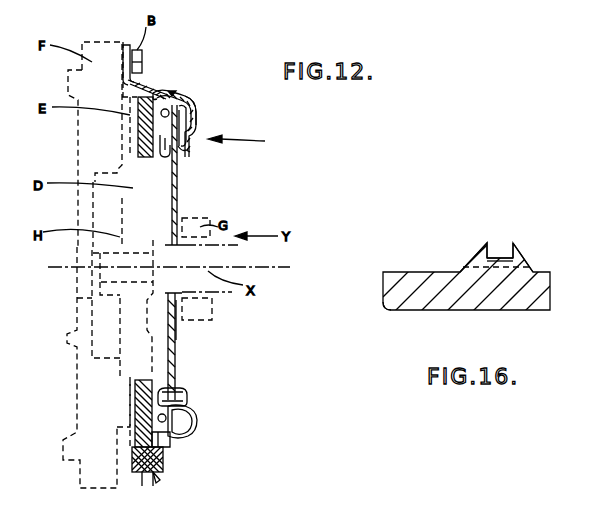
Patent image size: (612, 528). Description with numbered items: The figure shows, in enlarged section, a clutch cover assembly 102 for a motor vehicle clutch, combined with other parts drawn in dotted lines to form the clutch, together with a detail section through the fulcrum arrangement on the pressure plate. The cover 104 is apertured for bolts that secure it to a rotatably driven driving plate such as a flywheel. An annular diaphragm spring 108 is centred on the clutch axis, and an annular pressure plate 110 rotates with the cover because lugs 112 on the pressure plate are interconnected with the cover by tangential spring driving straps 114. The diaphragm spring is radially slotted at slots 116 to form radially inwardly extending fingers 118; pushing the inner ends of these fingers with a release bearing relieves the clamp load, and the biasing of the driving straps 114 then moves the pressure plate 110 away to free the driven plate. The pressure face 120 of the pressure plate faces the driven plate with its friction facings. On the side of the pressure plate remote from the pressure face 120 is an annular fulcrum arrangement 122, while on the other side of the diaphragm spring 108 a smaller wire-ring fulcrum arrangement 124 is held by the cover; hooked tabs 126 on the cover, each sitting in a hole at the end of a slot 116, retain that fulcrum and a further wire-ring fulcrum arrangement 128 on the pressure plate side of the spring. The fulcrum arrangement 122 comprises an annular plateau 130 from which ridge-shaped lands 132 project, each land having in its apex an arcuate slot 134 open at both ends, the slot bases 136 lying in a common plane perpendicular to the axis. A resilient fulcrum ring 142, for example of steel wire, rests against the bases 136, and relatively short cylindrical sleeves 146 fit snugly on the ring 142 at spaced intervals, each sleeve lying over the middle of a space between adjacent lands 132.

In FIG. 12, the clutch cover assembly 102 is at (265, 141).
In FIG. 12, the cover 104 is at (150, 82).
In FIG. 12, the annular diaphragm spring 108 is at (196, 122).
In FIG. 12, the annular pressure plate 110 is at (172, 90).
In FIG. 16, the annular pressure plate 110 is at (537, 295).
In FIG. 12, the lugs 112 is at (143, 474).
In FIG. 12, the spring driving straps 114 is at (155, 476).
In FIG. 12, the radial slots 116 is at (175, 338).
In FIG. 12, the fingers 118 is at (177, 208).
In FIG. 12, the pressure face 120 is at (133, 418).
In FIG. 16, the pressure face 120 is at (420, 312).
In FIG. 12, the annular fulcrum arrangement 122 is at (178, 93).
In FIG. 12, the fulcrum arrangement 124 is at (188, 153).
In FIG. 12, the hooked tabs 126 is at (140, 145).
In FIG. 12, the annular fulcrum arrangement 128 is at (166, 162).
In FIG. 16, the annular plateau 130 is at (485, 260).
In FIG. 16, the lands 132 is at (517, 243).
In FIG. 12, the arcuate slot 134 is at (172, 438).
In FIG. 16, the arcuate slot 134 is at (495, 242).
In FIG. 12, the slot bases 136 is at (178, 403).
In FIG. 16, the slot bases 136 is at (498, 257).
In FIG. 12, the resilient fulcrum ring 142 is at (191, 135).
In FIG. 12, the sleeves 146 is at (191, 103).